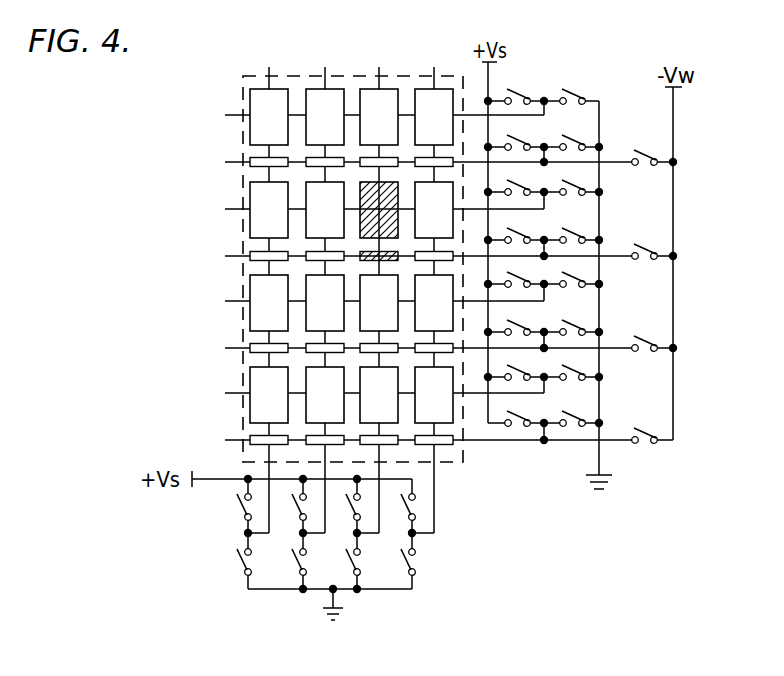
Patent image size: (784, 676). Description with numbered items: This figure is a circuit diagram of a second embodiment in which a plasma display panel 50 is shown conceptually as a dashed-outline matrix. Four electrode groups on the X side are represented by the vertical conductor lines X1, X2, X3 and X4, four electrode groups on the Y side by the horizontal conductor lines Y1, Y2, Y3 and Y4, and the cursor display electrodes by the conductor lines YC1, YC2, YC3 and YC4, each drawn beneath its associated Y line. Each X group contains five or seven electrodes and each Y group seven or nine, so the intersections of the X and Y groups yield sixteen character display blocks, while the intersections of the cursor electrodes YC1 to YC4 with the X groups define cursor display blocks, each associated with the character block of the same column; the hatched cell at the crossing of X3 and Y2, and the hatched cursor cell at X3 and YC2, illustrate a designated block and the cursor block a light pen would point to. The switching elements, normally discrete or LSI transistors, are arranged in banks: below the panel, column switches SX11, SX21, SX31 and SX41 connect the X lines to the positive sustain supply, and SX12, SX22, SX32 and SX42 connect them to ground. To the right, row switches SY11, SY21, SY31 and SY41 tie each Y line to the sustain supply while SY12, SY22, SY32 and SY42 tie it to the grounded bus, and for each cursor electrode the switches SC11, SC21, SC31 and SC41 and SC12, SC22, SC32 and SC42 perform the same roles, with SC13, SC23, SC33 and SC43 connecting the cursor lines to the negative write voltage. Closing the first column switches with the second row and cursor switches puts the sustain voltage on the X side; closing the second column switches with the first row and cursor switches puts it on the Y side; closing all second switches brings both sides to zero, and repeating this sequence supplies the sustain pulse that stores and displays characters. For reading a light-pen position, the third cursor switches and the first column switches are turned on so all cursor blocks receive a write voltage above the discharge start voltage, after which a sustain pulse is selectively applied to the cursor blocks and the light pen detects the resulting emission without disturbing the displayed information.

The plasma display panel 50 is at (458, 463).
The conductor line X1 is at (268, 288).
The conductor line X2 is at (325, 288).
The conductor line X3 is at (379, 288).
The conductor line X4 is at (434, 288).
The conductor line Y1 is at (369, 115).
The conductor line Y2 is at (369, 209).
The conductor line Y3 is at (369, 301).
The conductor line Y4 is at (369, 393).
The cursor display electrode YC1 is at (407, 162).
The cursor display electrode YC2 is at (407, 256).
The cursor display electrode YC3 is at (407, 348).
The cursor display electrode YC4 is at (407, 440).
The switching element SY11 is at (521, 88).
The switching element SY12 is at (578, 88).
The switching element SY21 is at (522, 179).
The switching element SY22 is at (578, 179).
The switching element SY31 is at (522, 271).
The switching element SY32 is at (578, 271).
The switching element SY41 is at (521, 364).
The switching element SY42 is at (578, 364).
The switching element SC11 is at (521, 135).
The switching element SC12 is at (578, 135).
The switching element SC13 is at (649, 151).
The switching element SC21 is at (522, 228).
The switching element SC22 is at (578, 228).
The switching element SC23 is at (649, 245).
The switching element SC31 is at (522, 320).
The switching element SC32 is at (578, 320).
The switching element SC33 is at (648, 337).
The switching element SC41 is at (521, 411).
The switching element SC42 is at (578, 411).
The switching element SC43 is at (646, 429).
The switching element SX11 is at (227, 508).
The switching element SX12 is at (227, 566).
The switching element SX21 is at (287, 508).
The switching element SX22 is at (283, 566).
The switching element SX31 is at (341, 508).
The switching element SX32 is at (337, 566).
The switching element SX41 is at (396, 508).
The switching element SX42 is at (391, 566).